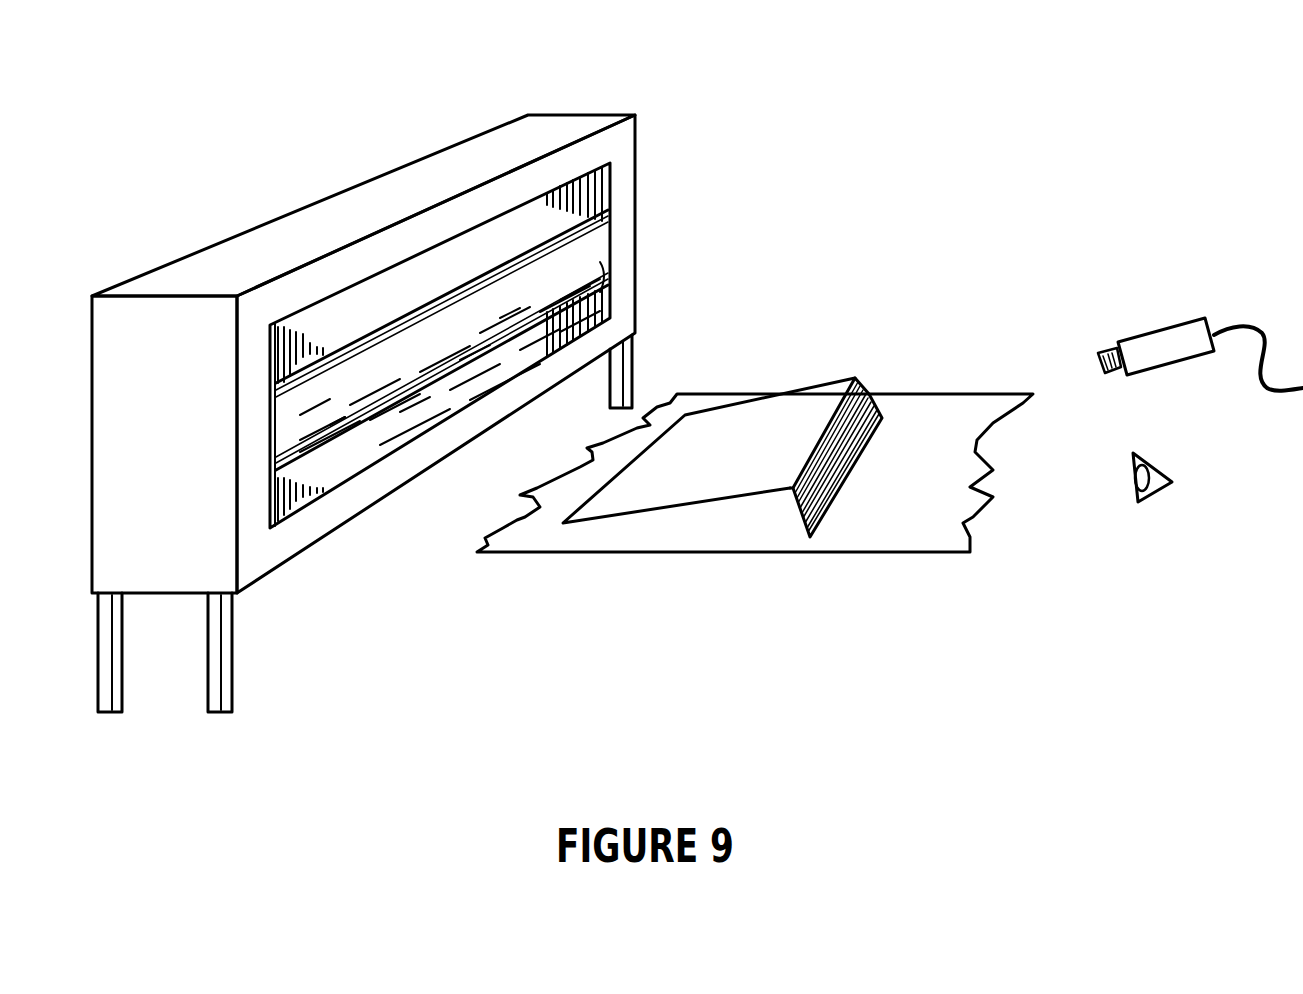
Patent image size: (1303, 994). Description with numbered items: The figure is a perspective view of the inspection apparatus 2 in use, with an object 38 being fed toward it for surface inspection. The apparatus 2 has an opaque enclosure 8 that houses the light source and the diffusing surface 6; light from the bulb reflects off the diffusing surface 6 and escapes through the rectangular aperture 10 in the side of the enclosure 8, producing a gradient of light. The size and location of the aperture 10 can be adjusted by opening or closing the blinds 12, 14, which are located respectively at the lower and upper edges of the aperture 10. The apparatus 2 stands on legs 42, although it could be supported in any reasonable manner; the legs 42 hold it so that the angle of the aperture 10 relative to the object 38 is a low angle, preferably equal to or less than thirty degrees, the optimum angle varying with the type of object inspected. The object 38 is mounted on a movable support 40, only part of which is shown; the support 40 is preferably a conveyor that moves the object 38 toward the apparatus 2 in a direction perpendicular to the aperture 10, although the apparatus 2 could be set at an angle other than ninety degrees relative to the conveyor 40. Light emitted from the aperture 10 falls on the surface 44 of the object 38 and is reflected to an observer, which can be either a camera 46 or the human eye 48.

The inspection apparatus 2 is at (308, 160).
The diffusing surface 6 is at (605, 275).
The opaque enclosure 8 is at (238, 257).
The aperture 10 is at (423, 352).
The blind 12 is at (353, 460).
The blind 14 is at (518, 232).
The object 38 is at (857, 378).
The movable support 40 is at (891, 548).
The legs 42 is at (122, 683).
The surface 44 is at (718, 473).
The camera 46 is at (1157, 340).
The human eye 48 is at (1150, 497).